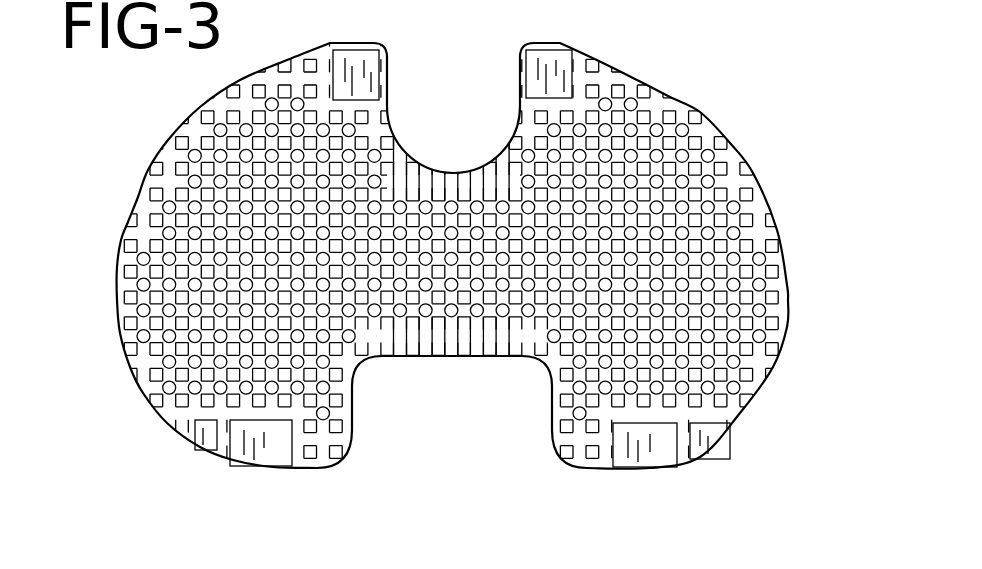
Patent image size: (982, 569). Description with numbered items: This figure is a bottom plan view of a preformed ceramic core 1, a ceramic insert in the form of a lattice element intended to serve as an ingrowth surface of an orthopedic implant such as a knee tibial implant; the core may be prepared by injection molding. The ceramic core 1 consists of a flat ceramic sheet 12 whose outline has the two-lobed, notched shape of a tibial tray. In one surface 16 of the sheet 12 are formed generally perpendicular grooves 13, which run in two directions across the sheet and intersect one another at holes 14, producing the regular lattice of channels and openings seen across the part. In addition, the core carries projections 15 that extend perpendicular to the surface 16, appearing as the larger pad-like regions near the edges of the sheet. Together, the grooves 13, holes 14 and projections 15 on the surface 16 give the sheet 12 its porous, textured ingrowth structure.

The ceramic core 1 is at (768, 104).
The flat ceramic sheet 12 is at (789, 298).
The grooves 13 is at (736, 152).
The holes 14 is at (329, 391).
The projections 15 is at (646, 450).
The surface 16 is at (710, 437).